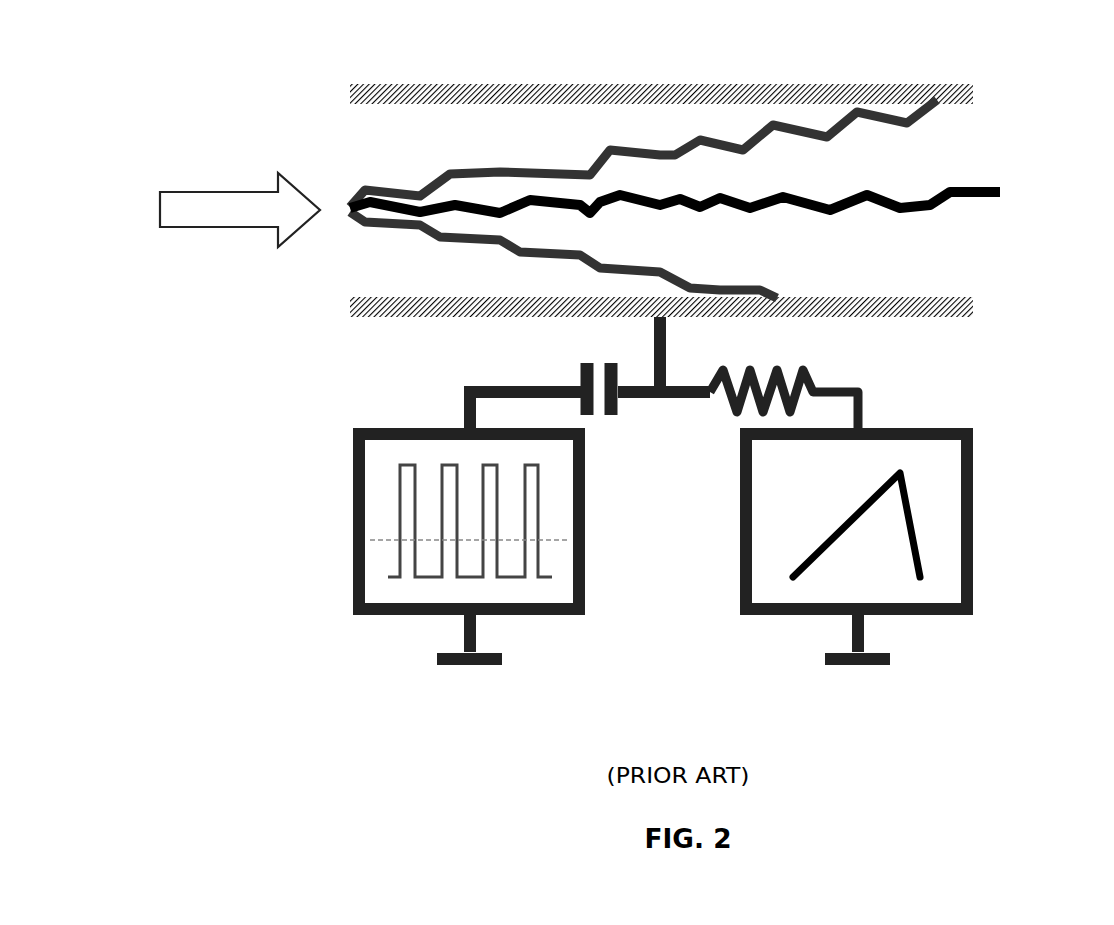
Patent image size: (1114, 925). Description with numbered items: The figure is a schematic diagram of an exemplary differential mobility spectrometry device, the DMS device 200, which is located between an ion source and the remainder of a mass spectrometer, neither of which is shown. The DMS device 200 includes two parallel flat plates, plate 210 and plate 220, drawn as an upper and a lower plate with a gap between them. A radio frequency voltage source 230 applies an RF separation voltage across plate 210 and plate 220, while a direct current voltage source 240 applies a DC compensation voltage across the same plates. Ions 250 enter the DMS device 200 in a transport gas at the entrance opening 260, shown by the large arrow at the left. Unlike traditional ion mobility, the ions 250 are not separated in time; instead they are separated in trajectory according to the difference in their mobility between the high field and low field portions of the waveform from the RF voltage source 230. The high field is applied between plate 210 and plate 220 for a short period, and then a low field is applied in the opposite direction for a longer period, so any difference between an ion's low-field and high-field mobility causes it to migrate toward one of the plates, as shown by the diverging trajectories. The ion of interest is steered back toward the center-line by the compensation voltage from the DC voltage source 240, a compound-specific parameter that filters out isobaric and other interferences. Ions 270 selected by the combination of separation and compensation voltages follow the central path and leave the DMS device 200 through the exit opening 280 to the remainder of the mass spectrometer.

The DMS device 200 is at (510, 760).
The plate 210 is at (357, 90).
The plate 220 is at (355, 300).
The radio frequency (RF) voltage source 230 is at (353, 596).
The direct current (DC) voltage source 240 is at (973, 597).
The ions 250 is at (350, 208).
The opening 260 is at (268, 131).
The ions 270 is at (1002, 197).
The opening 280 is at (1000, 135).